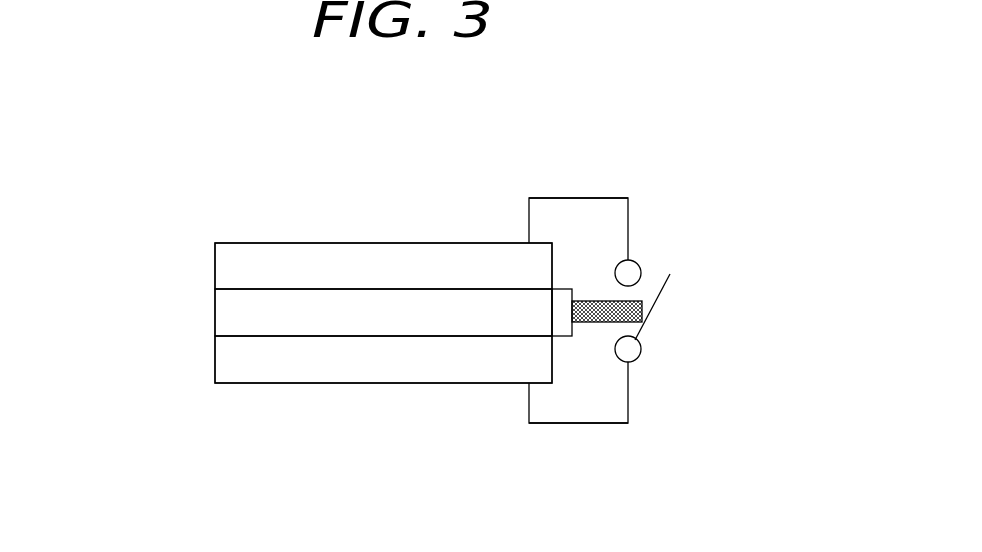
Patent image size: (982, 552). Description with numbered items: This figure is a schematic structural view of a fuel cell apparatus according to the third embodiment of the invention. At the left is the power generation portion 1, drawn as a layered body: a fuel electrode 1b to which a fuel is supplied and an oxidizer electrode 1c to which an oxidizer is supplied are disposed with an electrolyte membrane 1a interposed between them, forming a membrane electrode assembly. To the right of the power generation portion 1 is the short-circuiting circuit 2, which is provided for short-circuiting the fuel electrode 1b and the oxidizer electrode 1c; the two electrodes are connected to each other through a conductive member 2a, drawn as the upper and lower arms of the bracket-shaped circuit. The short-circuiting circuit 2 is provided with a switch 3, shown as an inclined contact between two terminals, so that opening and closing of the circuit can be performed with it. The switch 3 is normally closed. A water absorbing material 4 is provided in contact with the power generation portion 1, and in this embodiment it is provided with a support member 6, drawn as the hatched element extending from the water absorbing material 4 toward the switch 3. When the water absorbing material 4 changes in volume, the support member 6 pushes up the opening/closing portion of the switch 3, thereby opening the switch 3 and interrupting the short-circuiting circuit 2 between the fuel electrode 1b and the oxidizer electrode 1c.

The power generation portion 1 is at (178, 312).
The electrolyte membrane 1a is at (286, 312).
The fuel electrode 1b is at (368, 368).
The oxidizer electrode 1c is at (375, 253).
The short-circuiting circuit 2 is at (690, 154).
The conductive member 2a is at (587, 197).
The switch 3 is at (662, 287).
The water absorbing material 4 is at (565, 324).
The support member 6 is at (598, 323).